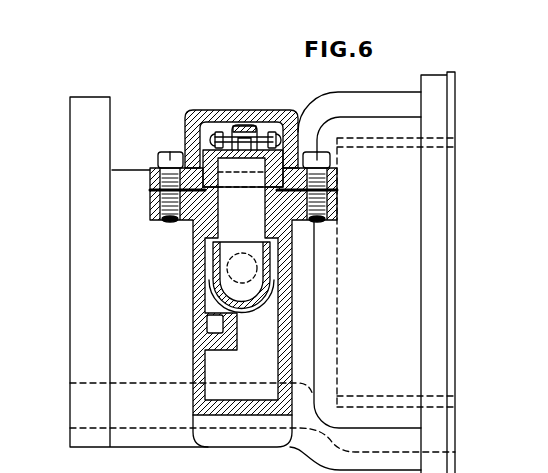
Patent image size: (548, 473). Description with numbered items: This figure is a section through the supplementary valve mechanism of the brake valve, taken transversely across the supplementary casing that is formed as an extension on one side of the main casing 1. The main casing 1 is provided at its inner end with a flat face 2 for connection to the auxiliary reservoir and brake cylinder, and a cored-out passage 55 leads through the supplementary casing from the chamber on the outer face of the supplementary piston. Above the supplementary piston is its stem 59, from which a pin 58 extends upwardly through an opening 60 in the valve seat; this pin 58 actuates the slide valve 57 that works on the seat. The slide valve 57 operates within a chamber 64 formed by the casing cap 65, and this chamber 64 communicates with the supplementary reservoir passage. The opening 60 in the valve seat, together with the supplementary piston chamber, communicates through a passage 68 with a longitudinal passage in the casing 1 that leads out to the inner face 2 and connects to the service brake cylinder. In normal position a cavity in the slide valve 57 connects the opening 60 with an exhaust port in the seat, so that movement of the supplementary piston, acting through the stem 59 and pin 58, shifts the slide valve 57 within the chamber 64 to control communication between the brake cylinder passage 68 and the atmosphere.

The casing 1 is at (396, 272).
The flat face 2 is at (72, 324).
The cored-out passage 55 is at (213, 325).
The slide valve 57 is at (203, 157).
The pin 58 is at (241, 200).
The stem 59 is at (215, 291).
The opening 60 is at (212, 223).
The chamber 64 is at (279, 128).
The casing cap 65 is at (205, 110).
The passage 68 is at (241, 319).